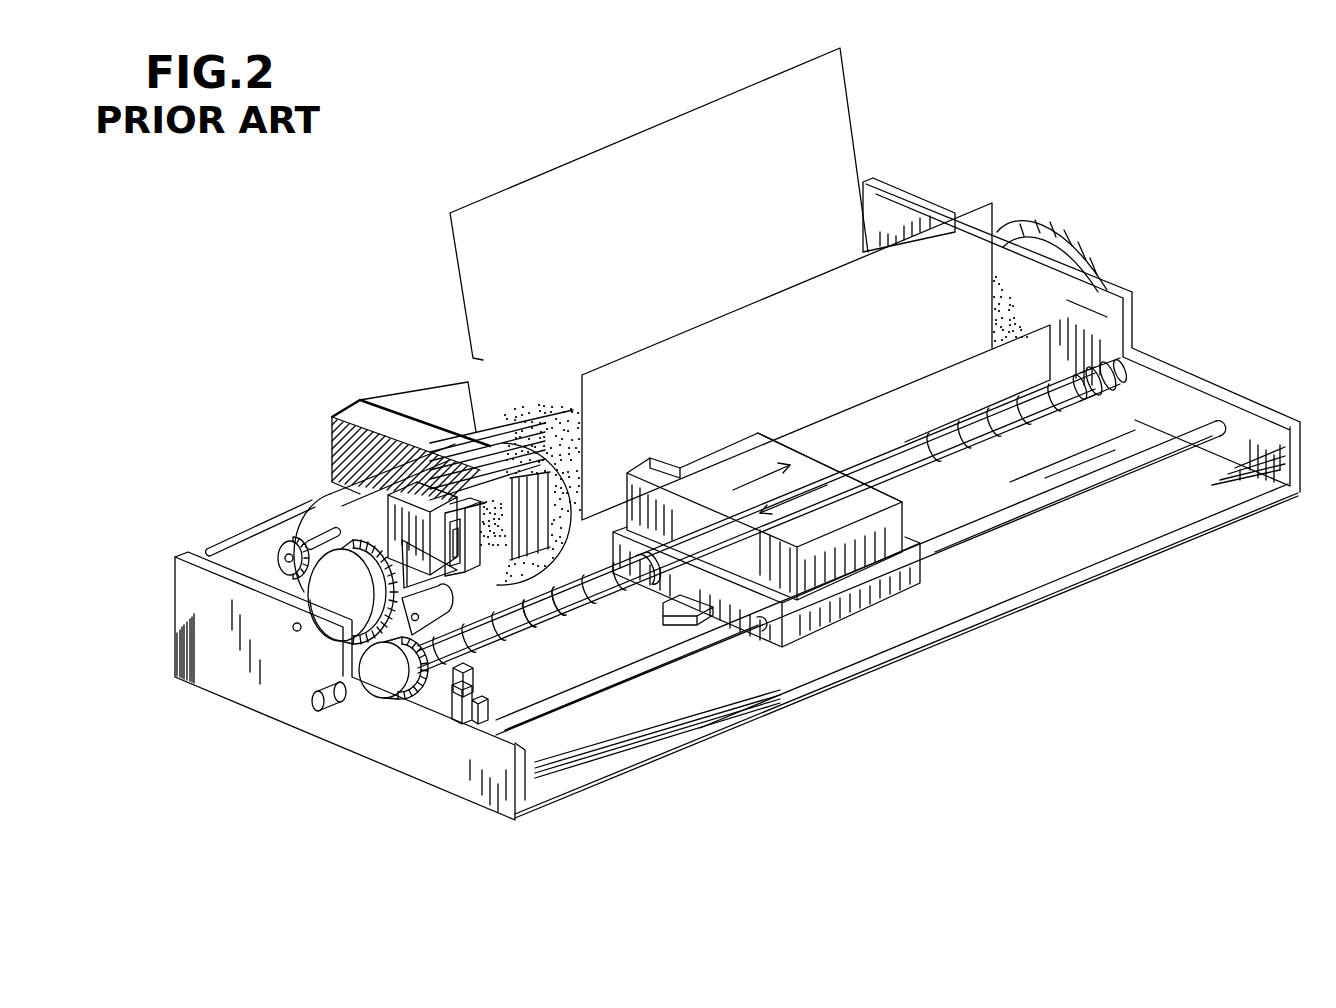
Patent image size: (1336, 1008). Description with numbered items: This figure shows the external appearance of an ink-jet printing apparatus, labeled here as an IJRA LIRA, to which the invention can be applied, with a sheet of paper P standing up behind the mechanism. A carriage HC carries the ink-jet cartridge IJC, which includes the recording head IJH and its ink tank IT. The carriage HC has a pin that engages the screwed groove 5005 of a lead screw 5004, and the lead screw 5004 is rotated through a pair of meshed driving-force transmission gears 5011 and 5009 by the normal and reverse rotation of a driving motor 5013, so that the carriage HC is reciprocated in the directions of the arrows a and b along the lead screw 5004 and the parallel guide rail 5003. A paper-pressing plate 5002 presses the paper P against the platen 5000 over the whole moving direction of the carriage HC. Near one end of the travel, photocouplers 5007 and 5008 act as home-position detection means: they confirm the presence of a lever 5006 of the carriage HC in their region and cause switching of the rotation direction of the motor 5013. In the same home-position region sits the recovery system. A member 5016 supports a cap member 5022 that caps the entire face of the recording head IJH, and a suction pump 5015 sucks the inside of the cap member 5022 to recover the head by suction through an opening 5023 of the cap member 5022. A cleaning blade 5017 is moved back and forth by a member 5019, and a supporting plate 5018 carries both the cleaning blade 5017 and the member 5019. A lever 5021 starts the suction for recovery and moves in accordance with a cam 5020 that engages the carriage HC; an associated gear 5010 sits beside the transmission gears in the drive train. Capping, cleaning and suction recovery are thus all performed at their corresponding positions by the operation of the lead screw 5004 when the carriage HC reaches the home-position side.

The recording paper P is at (833, 102).
The chassis side frame LIRA is at (933, 210).
The platen 5000 is at (1015, 312).
The paper-pressing plate 5002 is at (922, 397).
The guide rail 5003 is at (697, 643).
The lead screw 5004 is at (613, 594).
The screwed groove 5005 is at (550, 627).
The lever 5006 is at (705, 622).
The photocoupler 5007 is at (476, 688).
The photocoupler 5008 is at (455, 724).
The driving-force transmission gear 5009 is at (387, 685).
The gear 5010 is at (345, 615).
The driving-force transmission gear 5011 is at (307, 598).
The driving motor 5013 is at (357, 488).
The suction pump 5015 is at (460, 440).
The member 5016 is at (473, 437).
The cleaning blade 5017 is at (467, 487).
The supporting plate 5018 is at (358, 423).
The member 5019 is at (333, 416).
The cam 5020 is at (418, 692).
The lever 5021 is at (313, 496).
The cap member 5022 is at (545, 572).
The opening 5023 is at (500, 480).
The recording head IJH is at (660, 470).
The ink tank IT is at (807, 457).
The ink-jet cartridge IJC is at (893, 480).
The carriage HC is at (913, 573).